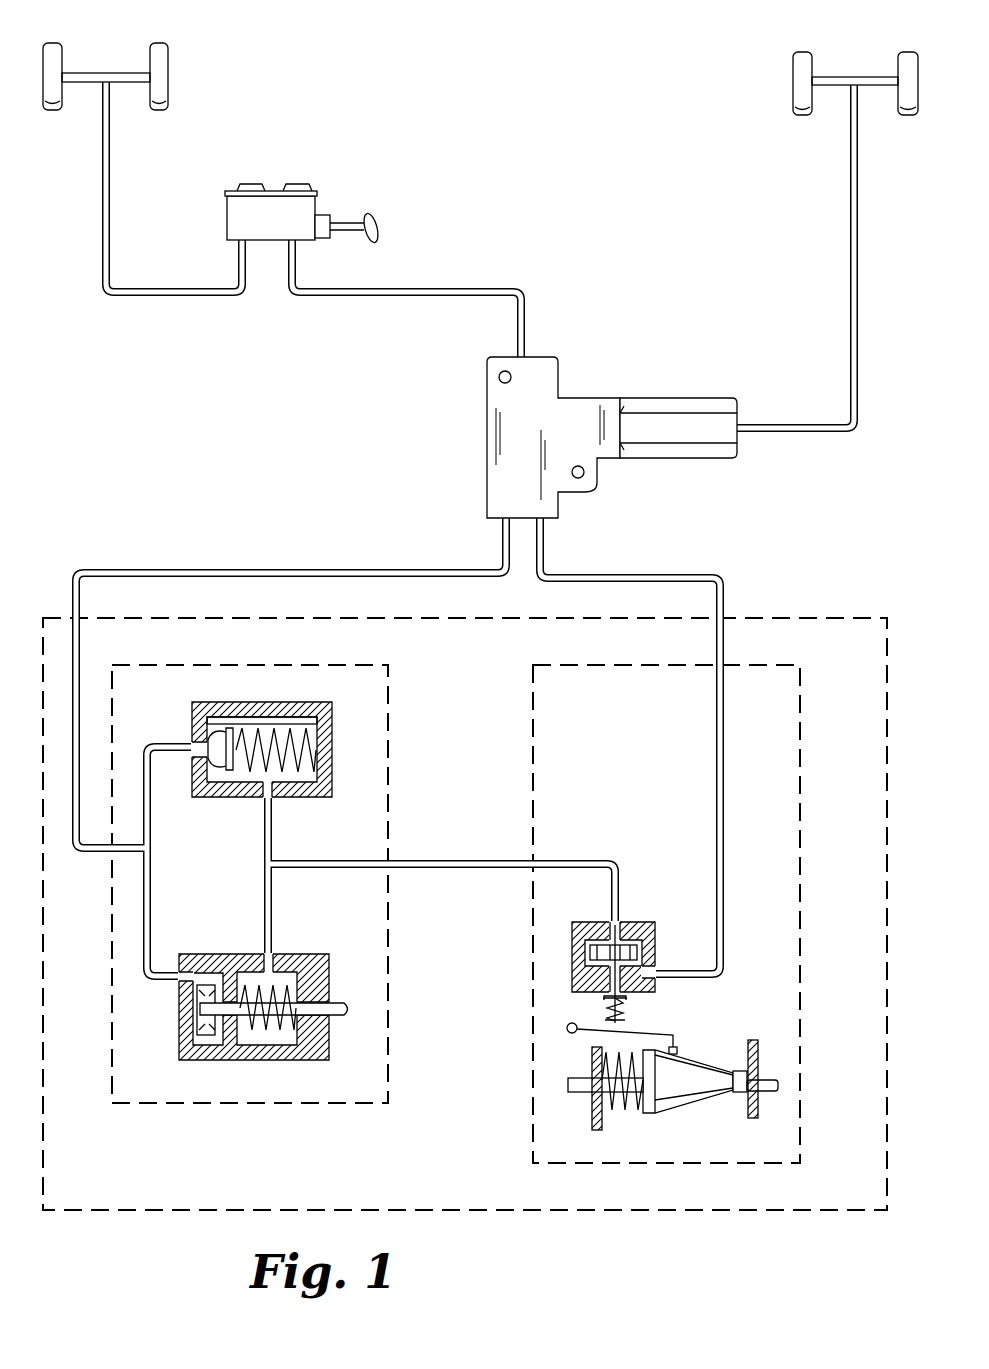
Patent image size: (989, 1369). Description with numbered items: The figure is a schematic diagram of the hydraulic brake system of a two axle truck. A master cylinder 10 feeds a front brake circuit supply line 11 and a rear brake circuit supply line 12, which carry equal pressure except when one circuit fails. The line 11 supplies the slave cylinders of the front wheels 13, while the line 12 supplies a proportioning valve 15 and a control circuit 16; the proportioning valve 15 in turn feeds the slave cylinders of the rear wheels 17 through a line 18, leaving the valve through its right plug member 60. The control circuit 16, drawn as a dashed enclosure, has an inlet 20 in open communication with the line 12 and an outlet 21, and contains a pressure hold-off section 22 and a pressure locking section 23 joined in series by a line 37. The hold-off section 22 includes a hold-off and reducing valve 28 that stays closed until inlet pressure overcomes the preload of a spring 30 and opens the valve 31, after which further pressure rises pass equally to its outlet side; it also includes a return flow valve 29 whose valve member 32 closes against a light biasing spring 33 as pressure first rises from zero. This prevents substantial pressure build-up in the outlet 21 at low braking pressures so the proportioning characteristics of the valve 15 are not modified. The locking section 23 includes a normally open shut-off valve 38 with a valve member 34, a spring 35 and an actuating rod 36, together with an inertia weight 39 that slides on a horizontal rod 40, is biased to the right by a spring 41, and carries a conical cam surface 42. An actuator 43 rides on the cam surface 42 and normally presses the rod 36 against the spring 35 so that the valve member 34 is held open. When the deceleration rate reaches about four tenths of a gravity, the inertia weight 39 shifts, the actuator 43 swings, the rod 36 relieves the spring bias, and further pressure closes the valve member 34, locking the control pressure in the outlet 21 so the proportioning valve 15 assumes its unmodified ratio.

The master cylinder 10 is at (275, 195).
The front brake circuit supply line 11 is at (165, 296).
The rear brake circuit supply line 12 is at (440, 290).
The front wheels 13 is at (150, 48).
The proportioning valve 15 is at (590, 406).
The control circuit 16 is at (818, 618).
The rear wheels 17 is at (898, 52).
The line 18 is at (850, 214).
The inlet 20 is at (82, 660).
The outlet 21 is at (717, 724).
The pressure hold-off section 22 is at (392, 692).
The pressure locking section 23 is at (802, 742).
The hold-off and reducing valve 28 is at (290, 705).
The return flow valve 29 is at (230, 955).
The spring 30 is at (292, 777).
The valve 31 is at (215, 727).
The valve member 32 is at (207, 1047).
The light biasing spring 33 is at (270, 1036).
The valve member 34 is at (655, 952).
The spring 35 is at (600, 1010).
The actuating rod 36 is at (626, 1017).
The line 37 is at (460, 861).
The shut-off valve 38 is at (636, 922).
The inertia weight 39 is at (690, 1100).
The horizontal rod 40 is at (770, 1095).
The spring 41 is at (628, 1115).
The conical cam surface 42 is at (700, 1062).
The actuator 43 is at (665, 1033).
The right plug member 60 is at (690, 452).